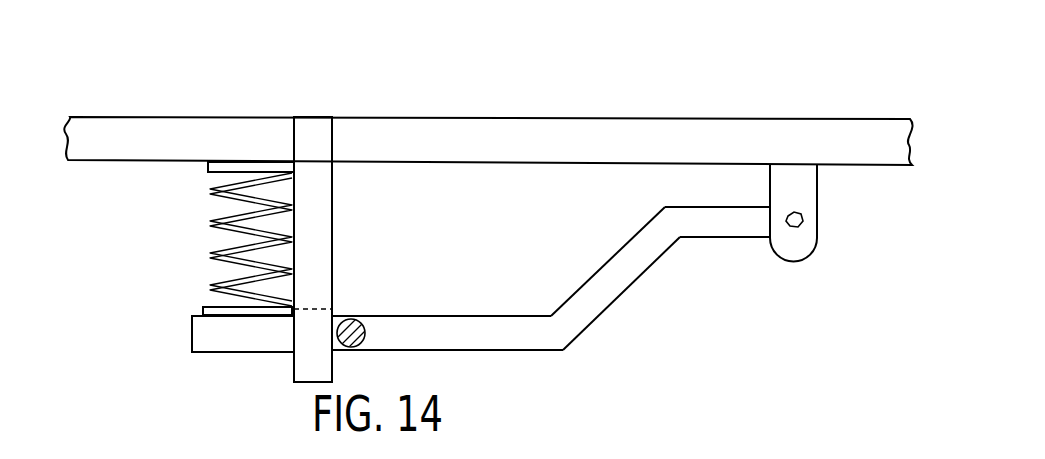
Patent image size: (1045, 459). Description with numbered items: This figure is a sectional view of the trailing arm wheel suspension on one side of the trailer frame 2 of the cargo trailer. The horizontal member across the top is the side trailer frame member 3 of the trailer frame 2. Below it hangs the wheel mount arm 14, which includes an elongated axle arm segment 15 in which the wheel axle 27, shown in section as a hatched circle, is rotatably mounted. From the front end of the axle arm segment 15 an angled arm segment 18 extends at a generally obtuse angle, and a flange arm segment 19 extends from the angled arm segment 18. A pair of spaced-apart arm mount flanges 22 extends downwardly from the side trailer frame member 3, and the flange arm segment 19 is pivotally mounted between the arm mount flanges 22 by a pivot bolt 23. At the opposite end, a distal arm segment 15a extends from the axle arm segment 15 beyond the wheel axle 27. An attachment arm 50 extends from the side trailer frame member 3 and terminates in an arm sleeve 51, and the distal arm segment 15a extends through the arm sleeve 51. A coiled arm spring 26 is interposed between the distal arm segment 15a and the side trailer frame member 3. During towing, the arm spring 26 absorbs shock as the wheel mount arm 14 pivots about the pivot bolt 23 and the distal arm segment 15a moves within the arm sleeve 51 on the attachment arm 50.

The trailer frame 2 is at (488, 105).
The side trailer frame member 3 is at (386, 137).
The wheel mount arm 14 is at (556, 328).
The axle arm segment 15 is at (465, 326).
The distal arm segment 15a is at (208, 345).
The angled arm segment 18 is at (625, 278).
The flange arm segment 19 is at (718, 227).
The arm mount flange 22 is at (805, 193).
The pivot bolt 23 is at (803, 221).
The arm spring 26 is at (208, 258).
The wheel axle 27 is at (355, 320).
The attachment arm 50 is at (318, 210).
The arm sleeve 51 is at (310, 364).